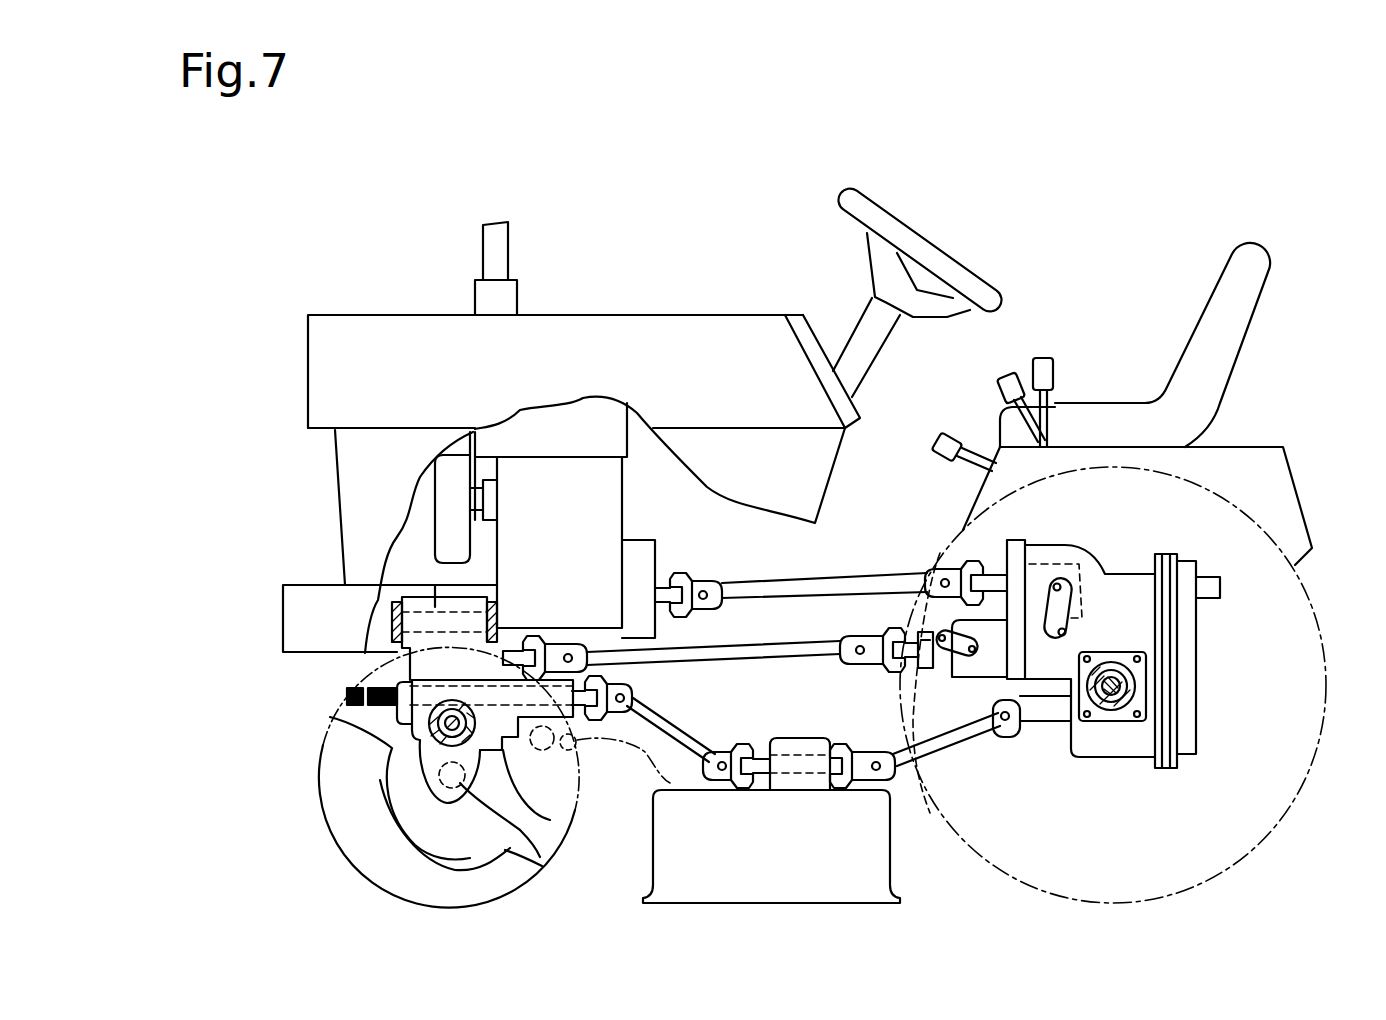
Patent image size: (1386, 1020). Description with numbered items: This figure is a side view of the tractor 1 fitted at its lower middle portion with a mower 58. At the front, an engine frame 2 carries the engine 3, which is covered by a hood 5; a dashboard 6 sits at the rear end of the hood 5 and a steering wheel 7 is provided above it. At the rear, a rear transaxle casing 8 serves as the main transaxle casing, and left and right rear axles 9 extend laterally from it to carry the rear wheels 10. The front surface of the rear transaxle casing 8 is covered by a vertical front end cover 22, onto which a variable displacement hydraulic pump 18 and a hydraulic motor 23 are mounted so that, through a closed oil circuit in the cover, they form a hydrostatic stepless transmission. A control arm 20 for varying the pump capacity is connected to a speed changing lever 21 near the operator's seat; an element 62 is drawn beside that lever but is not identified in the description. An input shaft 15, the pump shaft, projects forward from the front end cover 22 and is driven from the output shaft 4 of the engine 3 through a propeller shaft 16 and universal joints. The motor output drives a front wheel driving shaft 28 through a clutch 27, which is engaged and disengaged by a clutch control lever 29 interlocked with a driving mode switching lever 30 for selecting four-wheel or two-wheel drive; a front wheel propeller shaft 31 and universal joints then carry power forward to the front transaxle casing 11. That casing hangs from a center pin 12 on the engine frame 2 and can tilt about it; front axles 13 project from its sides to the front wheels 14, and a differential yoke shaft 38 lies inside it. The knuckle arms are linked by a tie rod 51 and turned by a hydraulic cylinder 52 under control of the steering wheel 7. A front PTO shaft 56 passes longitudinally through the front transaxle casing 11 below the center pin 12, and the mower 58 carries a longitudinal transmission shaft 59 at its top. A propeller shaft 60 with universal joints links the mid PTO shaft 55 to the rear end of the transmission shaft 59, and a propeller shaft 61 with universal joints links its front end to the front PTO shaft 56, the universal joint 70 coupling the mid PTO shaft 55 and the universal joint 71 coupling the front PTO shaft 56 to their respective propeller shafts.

The tractor 1 is at (413, 262).
The engine frame 2 is at (307, 655).
The engine 3 is at (577, 564).
The output shaft 4 is at (660, 576).
The hood 5 is at (607, 318).
The dashboard 6 is at (880, 427).
The steering wheel 7 is at (947, 258).
The rear transaxle casing 8 is at (1118, 750).
The rear axles 9 is at (1133, 684).
The rear wheels 10 is at (1250, 850).
The front transaxle casing 11 is at (505, 752).
The center pin 12 is at (435, 585).
The front axles 13 is at (560, 845).
The front wheels 14 is at (327, 820).
The input shaft 15 is at (990, 570).
The propeller shaft 16 is at (878, 584).
The variable displacement hydraulic pump 18 is at (1082, 618).
The control arm 20 is at (1071, 625).
The speed changing lever 21 is at (1043, 358).
The front end cover 22 is at (1014, 546).
The hydraulic motor 23 is at (965, 738).
The clutch 27 is at (913, 775).
The front wheel driving shaft 28 is at (915, 660).
The clutch control lever 29 is at (978, 665).
The driving mode switching lever 30 is at (938, 452).
The front wheel propeller shaft 31 is at (803, 640).
The differential yoke shaft 38 is at (420, 747).
The tie rod 51 is at (706, 768).
The hydraulic cylinder 52 is at (553, 753).
The mid PTO shaft 55 is at (1062, 722).
The front PTO shaft 56 is at (343, 695).
The mower 58 is at (652, 862).
The transmission shaft 59 is at (803, 772).
The propeller shaft 60 is at (946, 745).
The propeller shaft 61 is at (706, 748).
The lever 62 is at (1002, 392).
The universal joint 70 is at (1000, 752).
The universal joint 71 is at (640, 681).